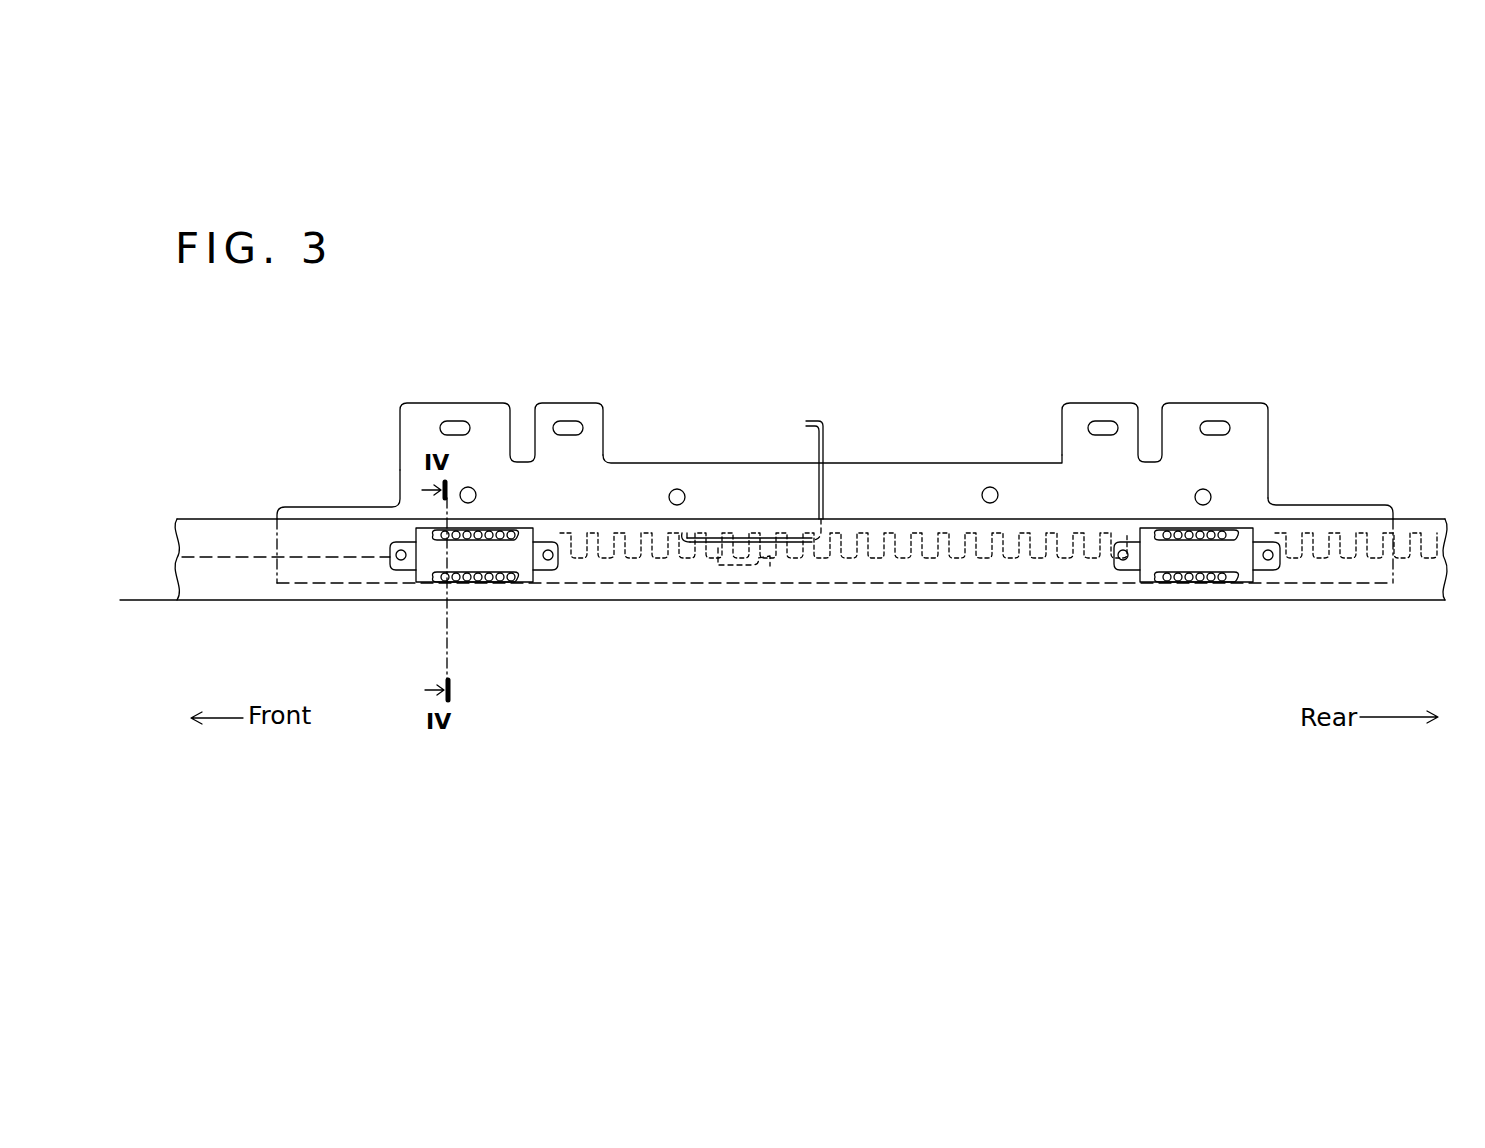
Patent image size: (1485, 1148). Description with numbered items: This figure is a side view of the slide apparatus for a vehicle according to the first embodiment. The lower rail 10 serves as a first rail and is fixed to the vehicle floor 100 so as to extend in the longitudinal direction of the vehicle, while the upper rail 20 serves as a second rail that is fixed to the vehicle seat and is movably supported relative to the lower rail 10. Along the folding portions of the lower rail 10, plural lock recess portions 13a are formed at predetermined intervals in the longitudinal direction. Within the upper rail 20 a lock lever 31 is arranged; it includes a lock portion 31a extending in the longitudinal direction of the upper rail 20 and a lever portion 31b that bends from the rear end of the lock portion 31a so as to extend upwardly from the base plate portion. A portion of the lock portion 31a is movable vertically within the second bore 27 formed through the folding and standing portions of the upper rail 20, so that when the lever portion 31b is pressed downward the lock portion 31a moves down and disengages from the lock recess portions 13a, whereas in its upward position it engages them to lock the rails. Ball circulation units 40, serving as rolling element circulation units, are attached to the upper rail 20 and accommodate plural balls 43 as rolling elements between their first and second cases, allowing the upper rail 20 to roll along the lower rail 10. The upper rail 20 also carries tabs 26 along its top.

The lower rail 10 is at (232, 614).
The lock recess portion 13a is at (935, 558).
The upper rail 20 is at (1356, 498).
The mounting tab 26 is at (581, 397).
The second bore 27 is at (768, 568).
The lock lever 31 is at (788, 455).
The lock portion 31a is at (752, 530).
The lever portion 31b is at (824, 454).
The ball circulation unit 40 is at (426, 588).
The ball 43 is at (494, 529).
The vehicle floor 100 is at (158, 592).